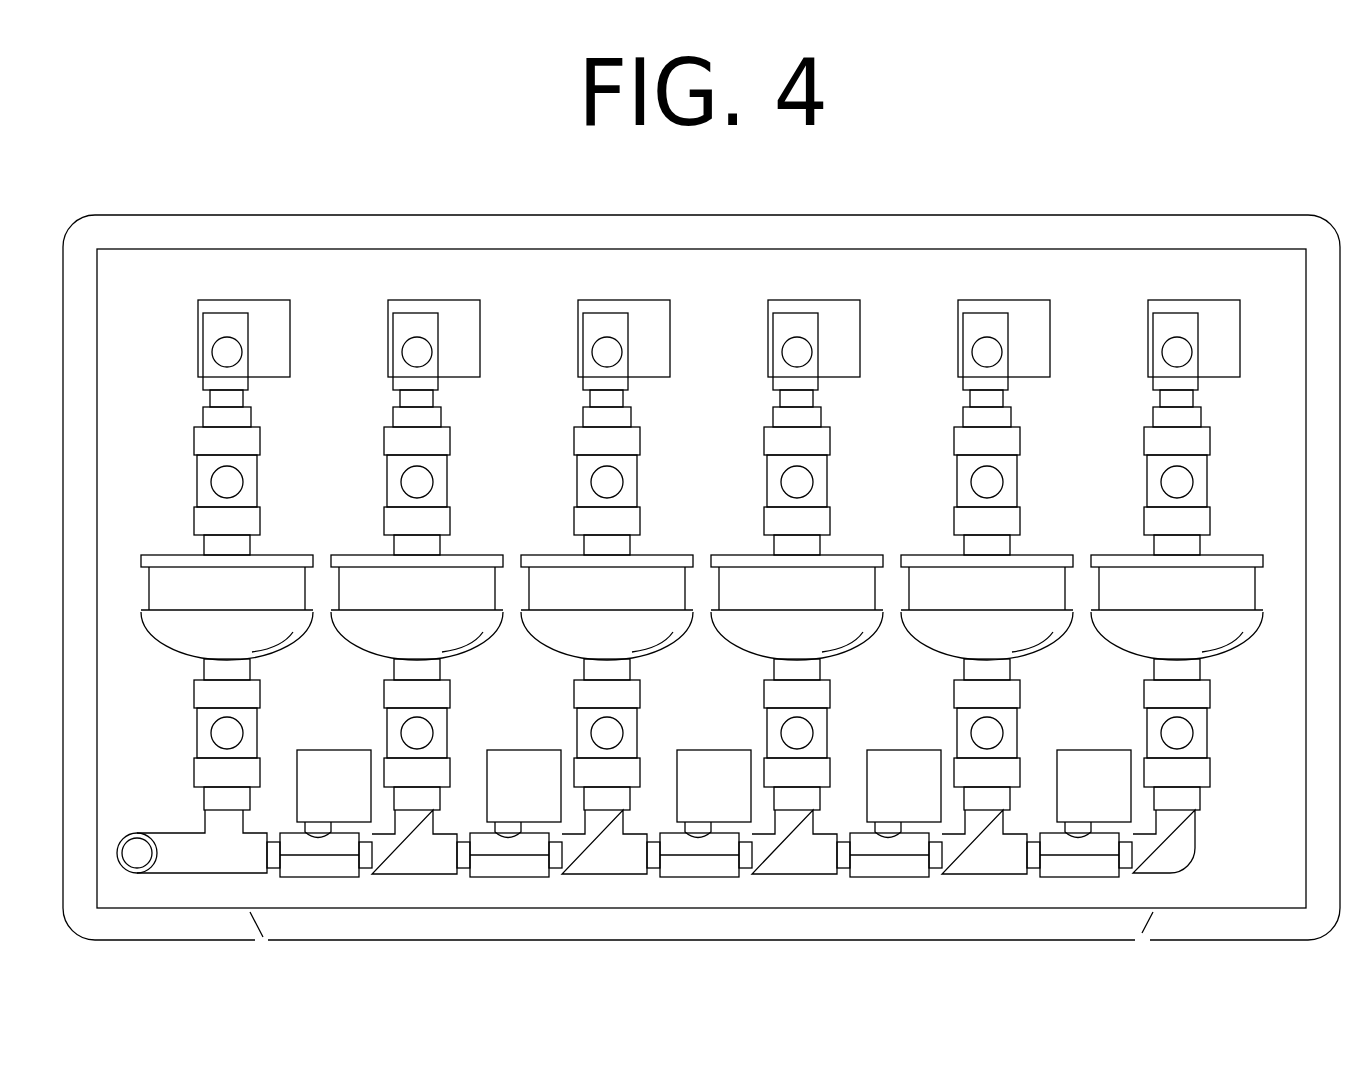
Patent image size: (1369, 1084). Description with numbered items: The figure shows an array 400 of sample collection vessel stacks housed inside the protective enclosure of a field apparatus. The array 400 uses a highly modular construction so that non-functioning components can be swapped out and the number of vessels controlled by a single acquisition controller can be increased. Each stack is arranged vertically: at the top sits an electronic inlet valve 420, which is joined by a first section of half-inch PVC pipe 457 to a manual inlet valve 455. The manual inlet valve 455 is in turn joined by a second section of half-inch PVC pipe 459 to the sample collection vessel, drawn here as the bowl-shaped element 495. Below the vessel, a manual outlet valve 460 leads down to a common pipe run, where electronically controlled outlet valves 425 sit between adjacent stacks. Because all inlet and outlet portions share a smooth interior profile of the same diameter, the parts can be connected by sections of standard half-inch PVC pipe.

The array 400 is at (701, 577).
The electronic inlet valve 420 is at (675, 348).
The electronically controlled outlet valve 425 is at (527, 743).
The manual inlet valve 455 is at (640, 483).
The first section of ½ inch PVC pipe 457 is at (597, 398).
The second section of ½ inch PVC pipe 459 is at (597, 546).
The manual outlet valve 460 is at (638, 742).
The reservoir 495 is at (657, 555).